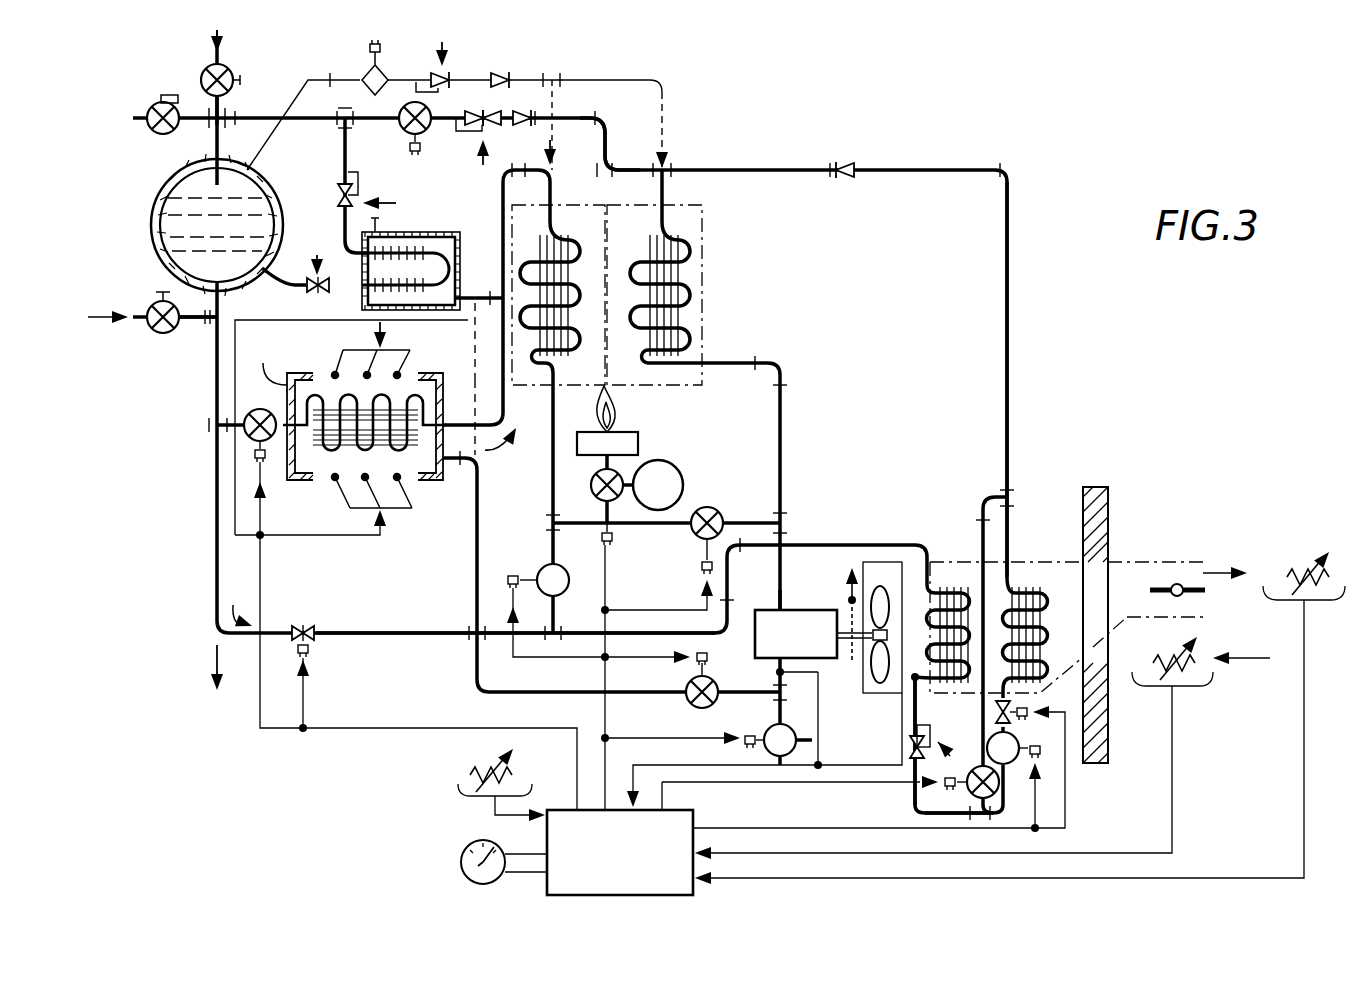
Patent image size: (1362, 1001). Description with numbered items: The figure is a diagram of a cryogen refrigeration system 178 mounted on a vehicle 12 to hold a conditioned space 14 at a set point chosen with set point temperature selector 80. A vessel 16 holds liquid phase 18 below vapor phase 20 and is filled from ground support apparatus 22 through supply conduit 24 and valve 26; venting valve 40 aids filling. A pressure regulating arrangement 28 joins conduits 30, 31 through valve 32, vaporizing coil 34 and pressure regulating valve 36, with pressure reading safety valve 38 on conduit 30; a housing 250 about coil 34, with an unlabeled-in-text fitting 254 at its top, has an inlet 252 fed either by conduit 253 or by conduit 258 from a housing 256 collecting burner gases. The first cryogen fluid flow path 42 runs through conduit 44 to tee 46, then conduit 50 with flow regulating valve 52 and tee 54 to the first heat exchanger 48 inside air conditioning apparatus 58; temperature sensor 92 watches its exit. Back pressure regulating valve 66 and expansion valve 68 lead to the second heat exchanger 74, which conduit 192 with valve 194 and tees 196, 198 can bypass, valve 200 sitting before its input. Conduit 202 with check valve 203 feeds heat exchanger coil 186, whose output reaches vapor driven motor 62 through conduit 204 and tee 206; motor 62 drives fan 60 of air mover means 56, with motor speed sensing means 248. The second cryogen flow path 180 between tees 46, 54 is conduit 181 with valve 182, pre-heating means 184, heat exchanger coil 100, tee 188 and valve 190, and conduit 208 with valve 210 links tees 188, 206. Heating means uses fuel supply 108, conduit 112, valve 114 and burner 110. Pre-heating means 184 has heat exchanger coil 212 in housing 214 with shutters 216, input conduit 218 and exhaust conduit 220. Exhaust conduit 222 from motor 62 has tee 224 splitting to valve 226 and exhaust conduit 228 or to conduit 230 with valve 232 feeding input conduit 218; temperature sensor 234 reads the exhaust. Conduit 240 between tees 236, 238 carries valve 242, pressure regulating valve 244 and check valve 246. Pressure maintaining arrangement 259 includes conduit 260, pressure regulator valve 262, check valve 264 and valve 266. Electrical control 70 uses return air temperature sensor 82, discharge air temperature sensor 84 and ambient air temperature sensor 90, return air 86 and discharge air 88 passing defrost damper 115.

The vehicle 12 is at (1108, 500).
The conditioned space 14 is at (1256, 629).
The vessel 16 is at (150, 236).
The liquid phase 18 is at (193, 192).
The vapor phase 20 is at (211, 178).
The ground support apparatus 22 is at (100, 320).
The supply conduit 24 is at (146, 310).
The valve 26 is at (168, 330).
The pressure regulating arrangement 28 is at (439, 229).
The conduit 30 is at (265, 283).
The conduit 31 is at (255, 125).
The valve 32 is at (308, 283).
The vaporizing coil 34 is at (418, 298).
The pressure regulating valve 36 is at (333, 195).
The pressure reading safety valve 38 is at (163, 98).
The venting valve 40 is at (205, 70).
The first cryogen fluid flow path 42 is at (236, 608).
The conduit 44 is at (213, 385).
The tee 46 is at (210, 428).
The first heat exchanger 48 is at (970, 585).
The conduit 50 is at (395, 630).
The flow regulating valve 52 is at (300, 622).
The tee 54 is at (560, 628).
The air mover means 56 is at (814, 601).
The air conditioning apparatus 58 is at (863, 693).
The fan 60 is at (886, 598).
The vapor driven motor 62 is at (758, 610).
The back pressure regulating valve 66 is at (930, 735).
The expansion valve 68 is at (992, 712).
The electrical control 70 is at (566, 810).
The second heat exchanger 74 is at (1050, 612).
The set point temperature selector 80 is at (462, 850).
The return air temperature sensor 82 is at (1162, 648).
The discharge air temperature sensor 84 is at (1296, 563).
The return air 86 is at (1255, 662).
The discharge air 88 is at (1212, 573).
The ambient air temperature sensor 90 is at (462, 770).
The temperature sensor 92 is at (913, 673).
The heat exchanger coil 100 is at (573, 238).
The fuel supply 108 is at (677, 465).
The burner 110 is at (577, 440).
The conduit 112 is at (627, 495).
The valve 114 is at (592, 500).
The defrost damper 115 is at (1175, 583).
The refrigeration system 178 is at (783, 100).
The second cryogen flow path 180 is at (521, 442).
The conduit 181 is at (516, 178).
The valve 182 is at (250, 412).
The pre-heating means 184 is at (320, 348).
The heat exchanger coil 186 is at (700, 268).
The tee 188 is at (548, 503).
The valve 190 is at (540, 572).
The conduit 192 is at (988, 502).
The valve 194 is at (960, 800).
The tee 196 is at (978, 815).
The tee 198 is at (1012, 505).
The valve 200 is at (1015, 735).
The conduit 202 is at (1012, 285).
The check valve 203 is at (850, 166).
The conduit 204 is at (783, 435).
The tee 206 is at (790, 523).
The conduit 208 is at (748, 520).
The valve 210 is at (697, 535).
The heat exchanger coil 212 is at (330, 460).
The housing 214 is at (445, 480).
The shutters 216 is at (352, 358).
The input conduit 218 is at (472, 580).
The exhaust conduit 220 is at (263, 363).
The exhaust conduit 222 is at (775, 672).
The tee 224 is at (785, 693).
The valve 226 is at (770, 730).
The exhaust conduit 228 is at (818, 753).
The conduit 230 is at (570, 696).
The valve 232 is at (688, 680).
The temperature sensor 234 is at (785, 676).
The tee 236 is at (356, 115).
The tee 238 is at (672, 165).
The conduit 240 is at (568, 122).
The valve 242 is at (406, 138).
The pressure regulating valve 244 is at (468, 128).
The check valve 246 is at (522, 110).
The motor speed sensing means 248 is at (845, 580).
The housing 250 is at (458, 232).
The inlet 252 is at (474, 312).
The conduit 253 is at (474, 380).
The vent 254 is at (372, 218).
The housing 256 is at (702, 310).
The conduit 258 is at (484, 295).
The pressure maintaining arrangement 259 is at (556, 64).
The conduit 260 is at (300, 88).
The pressure regulator valve 262 is at (430, 76).
The check valve 264 is at (490, 78).
The valve 266 is at (342, 60).